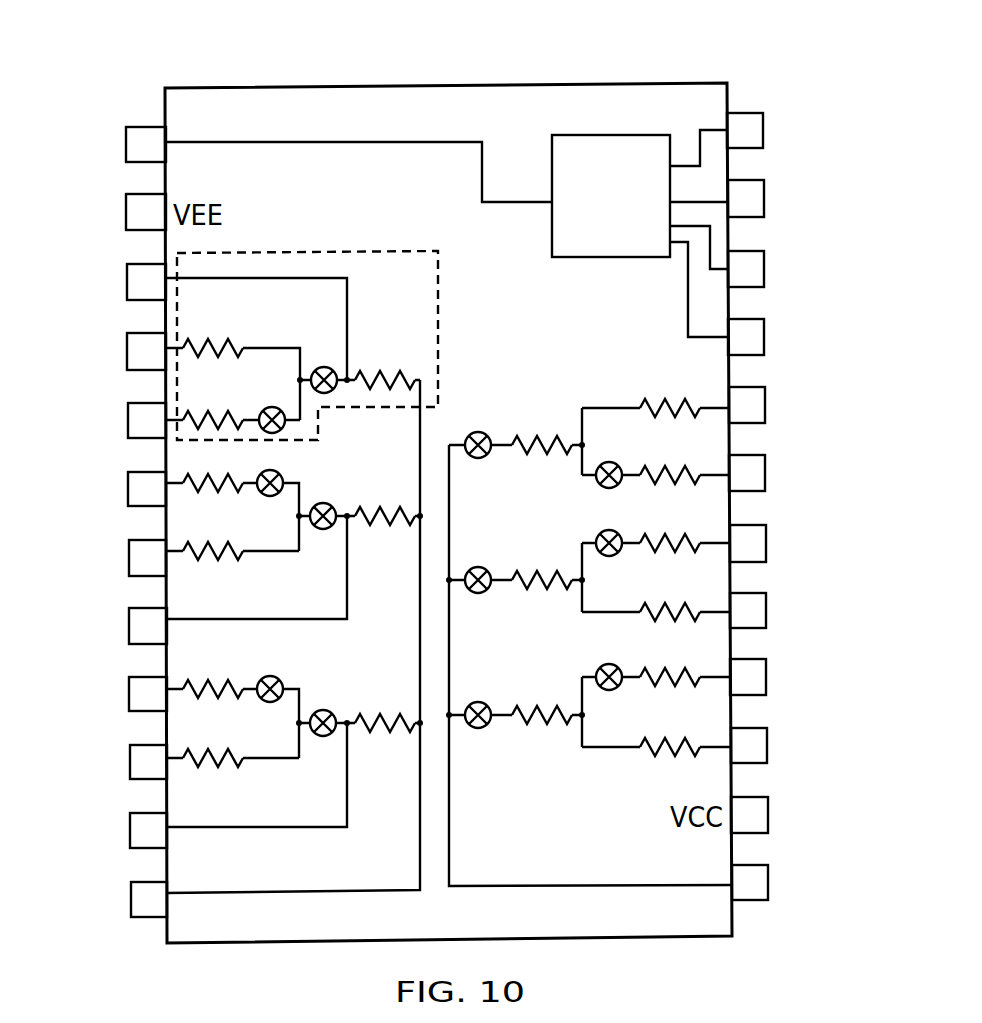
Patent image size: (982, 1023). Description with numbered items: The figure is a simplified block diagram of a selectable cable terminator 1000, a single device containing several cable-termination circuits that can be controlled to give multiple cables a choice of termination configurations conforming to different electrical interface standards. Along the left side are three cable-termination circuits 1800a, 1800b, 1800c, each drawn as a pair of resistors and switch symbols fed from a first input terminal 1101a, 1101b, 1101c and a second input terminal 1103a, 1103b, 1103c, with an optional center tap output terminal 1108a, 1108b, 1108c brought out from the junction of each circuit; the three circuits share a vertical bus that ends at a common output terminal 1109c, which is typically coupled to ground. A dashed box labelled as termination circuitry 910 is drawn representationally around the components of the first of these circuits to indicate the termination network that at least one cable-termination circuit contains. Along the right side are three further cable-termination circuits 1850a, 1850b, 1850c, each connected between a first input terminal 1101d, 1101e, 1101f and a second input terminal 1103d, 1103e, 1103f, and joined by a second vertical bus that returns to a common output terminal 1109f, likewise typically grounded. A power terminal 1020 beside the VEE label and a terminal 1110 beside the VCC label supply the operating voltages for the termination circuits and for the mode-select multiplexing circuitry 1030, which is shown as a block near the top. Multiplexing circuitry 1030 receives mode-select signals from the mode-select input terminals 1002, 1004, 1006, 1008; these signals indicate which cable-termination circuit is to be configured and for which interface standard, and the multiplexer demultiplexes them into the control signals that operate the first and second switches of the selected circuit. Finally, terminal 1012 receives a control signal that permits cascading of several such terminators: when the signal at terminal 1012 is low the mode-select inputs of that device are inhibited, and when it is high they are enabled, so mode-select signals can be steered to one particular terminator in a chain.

The selectable cable terminator 1000 is at (573, 51).
The cascade control terminal 1012 is at (126, 145).
The power terminal 1020 is at (126, 213).
The center tap output terminal 1108a is at (127, 283).
The second input terminal 1103a is at (127, 352).
The first input terminal 1101a is at (128, 421).
The first input terminal 1101b is at (128, 490).
The second input terminal 1103b is at (129, 559).
The center tap output terminal 1108b is at (129, 627).
The first input terminal 1101c is at (129, 695).
The second input terminal 1103c is at (130, 763).
The center tap output terminal 1108c is at (130, 831).
The common output terminal 1109c is at (131, 900).
The mode-select input terminal 1002 is at (763, 131).
The mode-select input terminal 1004 is at (764, 199).
The mode-select input terminal 1006 is at (764, 270).
The mode-select input terminal 1008 is at (764, 338).
The second input terminal 1103d is at (765, 406).
The first input terminal 1101d is at (765, 474).
The first input terminal 1101e is at (766, 544).
The second input terminal 1103e is at (766, 612).
The first input terminal 1101f is at (766, 678).
The second input terminal 1103f is at (767, 747).
The VCC supply pin 1110 is at (768, 816).
The common output terminal 1109f is at (768, 884).
The cable-termination circuit 1800a is at (302, 229).
The cable-termination circuit 1800b is at (319, 477).
The cable-termination circuit 1800c is at (319, 679).
The cable-termination circuit 1850a is at (551, 391).
The cable-termination circuit 1850b is at (559, 627).
The cable-termination circuit 1850c is at (591, 775).
The termination circuitry 910 is at (439, 261).
The mode-select multiplexing circuitry 1030 is at (621, 258).